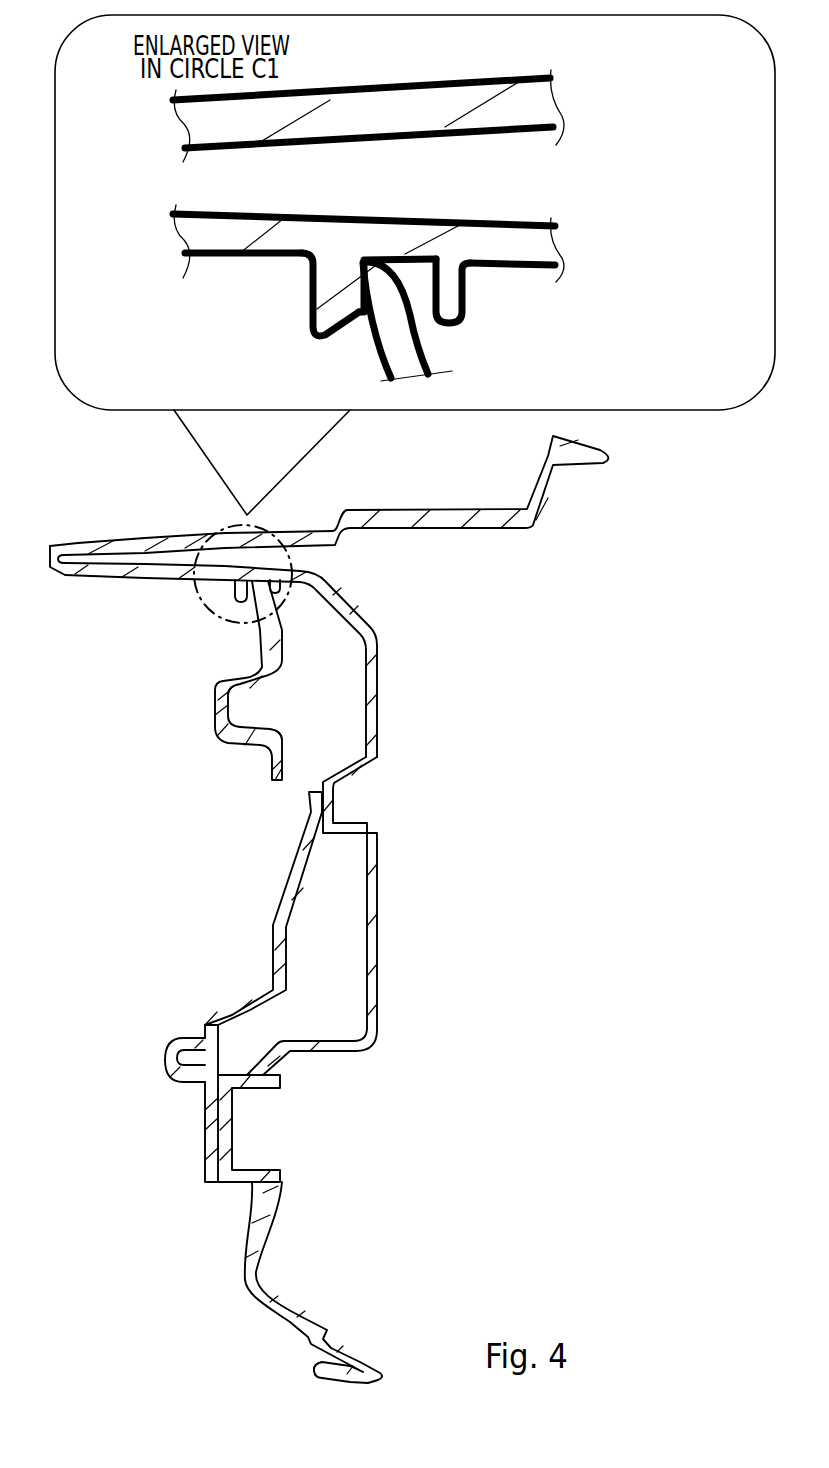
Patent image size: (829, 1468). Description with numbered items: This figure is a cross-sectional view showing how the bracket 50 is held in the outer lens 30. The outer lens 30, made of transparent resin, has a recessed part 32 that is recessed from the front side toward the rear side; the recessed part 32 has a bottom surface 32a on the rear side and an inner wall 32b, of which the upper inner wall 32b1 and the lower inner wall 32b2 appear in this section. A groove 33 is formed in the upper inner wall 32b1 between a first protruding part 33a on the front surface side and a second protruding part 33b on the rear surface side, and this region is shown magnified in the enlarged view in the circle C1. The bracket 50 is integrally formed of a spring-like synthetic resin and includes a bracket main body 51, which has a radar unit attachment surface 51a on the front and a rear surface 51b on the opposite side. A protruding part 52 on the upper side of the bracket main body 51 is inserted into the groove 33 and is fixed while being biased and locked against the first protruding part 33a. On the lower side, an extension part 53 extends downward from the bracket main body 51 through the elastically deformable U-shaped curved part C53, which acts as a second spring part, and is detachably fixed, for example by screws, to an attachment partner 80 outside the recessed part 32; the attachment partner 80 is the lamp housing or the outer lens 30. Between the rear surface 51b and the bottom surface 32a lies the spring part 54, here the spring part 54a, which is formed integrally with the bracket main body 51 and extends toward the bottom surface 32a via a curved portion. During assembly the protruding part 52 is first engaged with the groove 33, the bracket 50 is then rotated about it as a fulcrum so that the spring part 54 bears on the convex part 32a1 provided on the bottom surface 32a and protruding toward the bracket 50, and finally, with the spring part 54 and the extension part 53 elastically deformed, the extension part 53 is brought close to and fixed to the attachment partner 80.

The outer lens 30 is at (421, 96).
The recessed part 32 is at (344, 731).
The bottom surface 32a is at (370, 882).
The convex part 32a1 is at (338, 806).
The inner wall 32b is at (302, 644).
The upper inner wall 32b1 is at (209, 258).
The lower inner wall 32b2 is at (320, 1041).
The groove 33 is at (435, 294).
The first protruding part 33a is at (311, 288).
The second protruding part 33b is at (468, 292).
The bracket 50 is at (430, 360).
The bracket main body 51 is at (276, 640).
The radar unit attachment surface 51a is at (264, 653).
The rear surface 51b is at (283, 688).
The protruding part 52 is at (374, 338).
The extension part 53 is at (212, 1185).
The spring part 54 is at (284, 908).
The spring part 54a is at (294, 880).
The attachment partner 80 is at (232, 1142).
The circle C1 is at (217, 523).
The U-shaped curved part C53 is at (163, 1060).